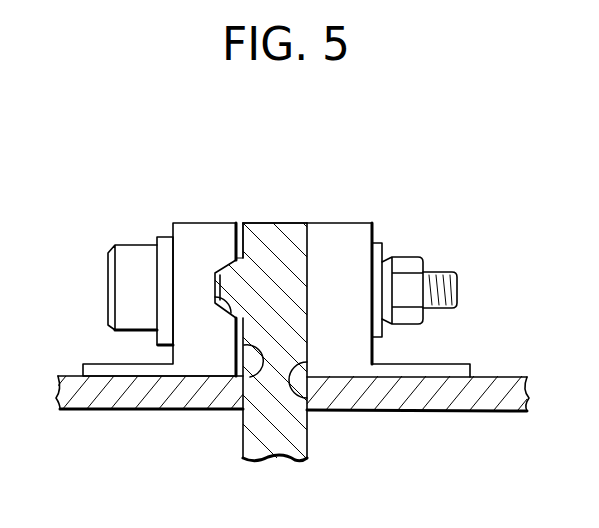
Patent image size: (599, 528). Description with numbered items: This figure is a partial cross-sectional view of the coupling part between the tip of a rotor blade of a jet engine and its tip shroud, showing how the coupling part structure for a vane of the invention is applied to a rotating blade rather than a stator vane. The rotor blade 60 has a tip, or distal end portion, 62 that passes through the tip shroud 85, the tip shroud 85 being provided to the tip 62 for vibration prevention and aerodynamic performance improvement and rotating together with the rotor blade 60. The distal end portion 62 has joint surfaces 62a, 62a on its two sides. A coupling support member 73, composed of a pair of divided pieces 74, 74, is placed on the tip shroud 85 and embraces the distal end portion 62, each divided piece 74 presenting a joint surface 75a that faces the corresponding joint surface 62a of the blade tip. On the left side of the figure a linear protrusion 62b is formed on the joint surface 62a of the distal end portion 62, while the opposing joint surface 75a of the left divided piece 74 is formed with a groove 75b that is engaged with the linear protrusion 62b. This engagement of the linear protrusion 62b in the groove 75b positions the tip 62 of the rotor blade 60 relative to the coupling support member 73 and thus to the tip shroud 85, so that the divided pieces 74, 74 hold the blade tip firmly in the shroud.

The rotor blade 60 is at (243, 437).
The tip 62 is at (258, 312).
The joint surface 62a is at (242, 244).
The linear protrusion 62b is at (233, 292).
The coupling support member 73 is at (276, 300).
The divided piece 74 is at (92, 364).
The joint surface 75a is at (246, 374).
The groove 75b is at (242, 315).
The tip shroud 85 is at (470, 397).